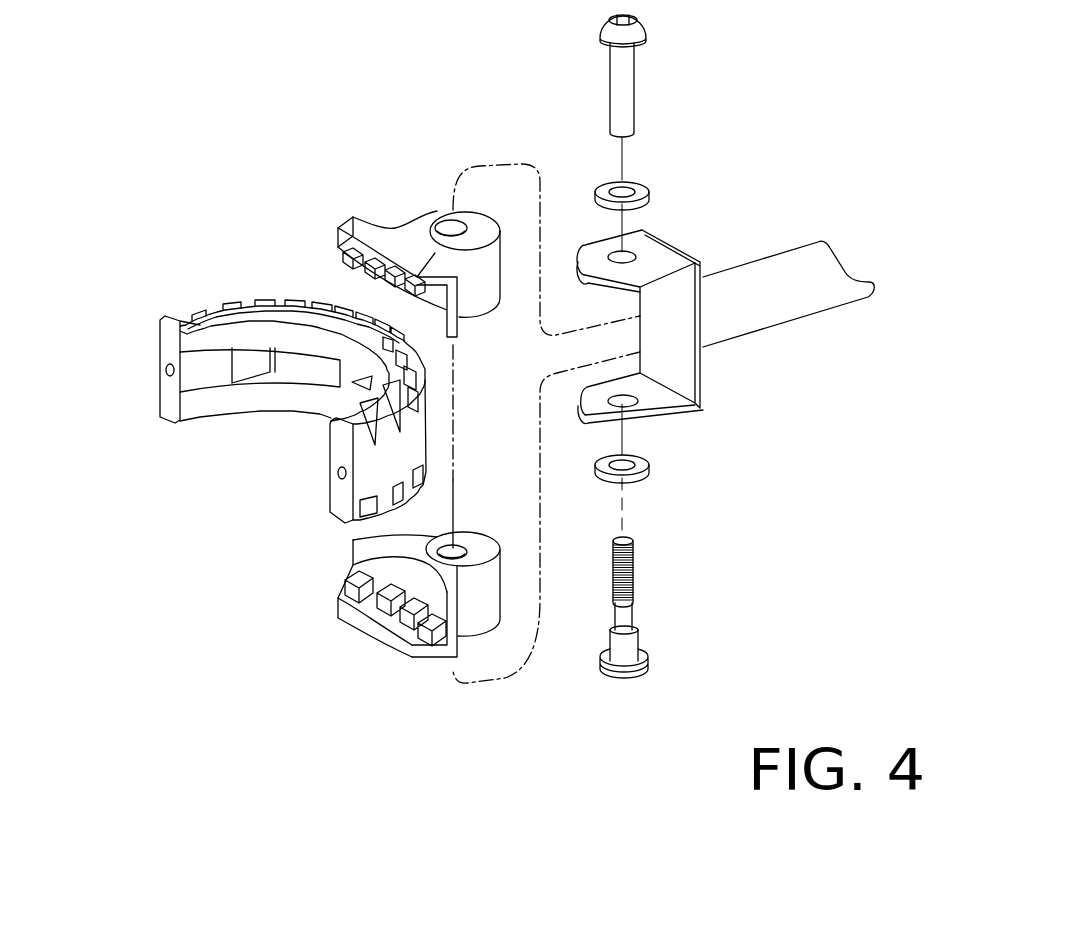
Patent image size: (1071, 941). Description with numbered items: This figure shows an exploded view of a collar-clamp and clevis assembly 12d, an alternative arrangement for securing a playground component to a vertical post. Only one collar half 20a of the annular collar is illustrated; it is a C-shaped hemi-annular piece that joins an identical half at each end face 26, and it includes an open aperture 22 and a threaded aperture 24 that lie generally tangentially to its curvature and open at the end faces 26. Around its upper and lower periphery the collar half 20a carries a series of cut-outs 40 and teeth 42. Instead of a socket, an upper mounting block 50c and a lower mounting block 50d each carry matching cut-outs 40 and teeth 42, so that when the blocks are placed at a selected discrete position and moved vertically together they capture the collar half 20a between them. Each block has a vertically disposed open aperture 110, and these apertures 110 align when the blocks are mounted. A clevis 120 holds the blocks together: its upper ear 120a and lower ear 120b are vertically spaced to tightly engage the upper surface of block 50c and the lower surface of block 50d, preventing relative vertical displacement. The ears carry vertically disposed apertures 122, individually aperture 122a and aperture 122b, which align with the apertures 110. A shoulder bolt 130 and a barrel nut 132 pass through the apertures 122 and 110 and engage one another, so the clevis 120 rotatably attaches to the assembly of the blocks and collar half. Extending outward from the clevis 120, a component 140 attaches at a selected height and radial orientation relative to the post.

The collar-clamp and clevis assembly 12d is at (342, 104).
The first hemi-annular collar half 20a is at (150, 323).
The open aperture 22 is at (165, 369).
The threaded aperture 24 is at (338, 472).
The end face 26 is at (166, 352).
The cut-outs 40 is at (188, 312).
The teeth 42 is at (206, 311).
The upper mounting block 50c is at (480, 287).
The lower mounting block 50d is at (492, 540).
The open aperture 110 is at (454, 232).
The clevis 120 is at (705, 261).
The upper ear 120a is at (587, 267).
The lower ear 120b is at (588, 400).
The aperture 122 is at (790, 164).
The aperture of upper ear 122a is at (637, 254).
The aperture of lower ear 122b is at (636, 403).
The shoulder bolt 130 is at (625, 655).
The barrel nut 132 is at (622, 78).
The component 140 is at (795, 323).